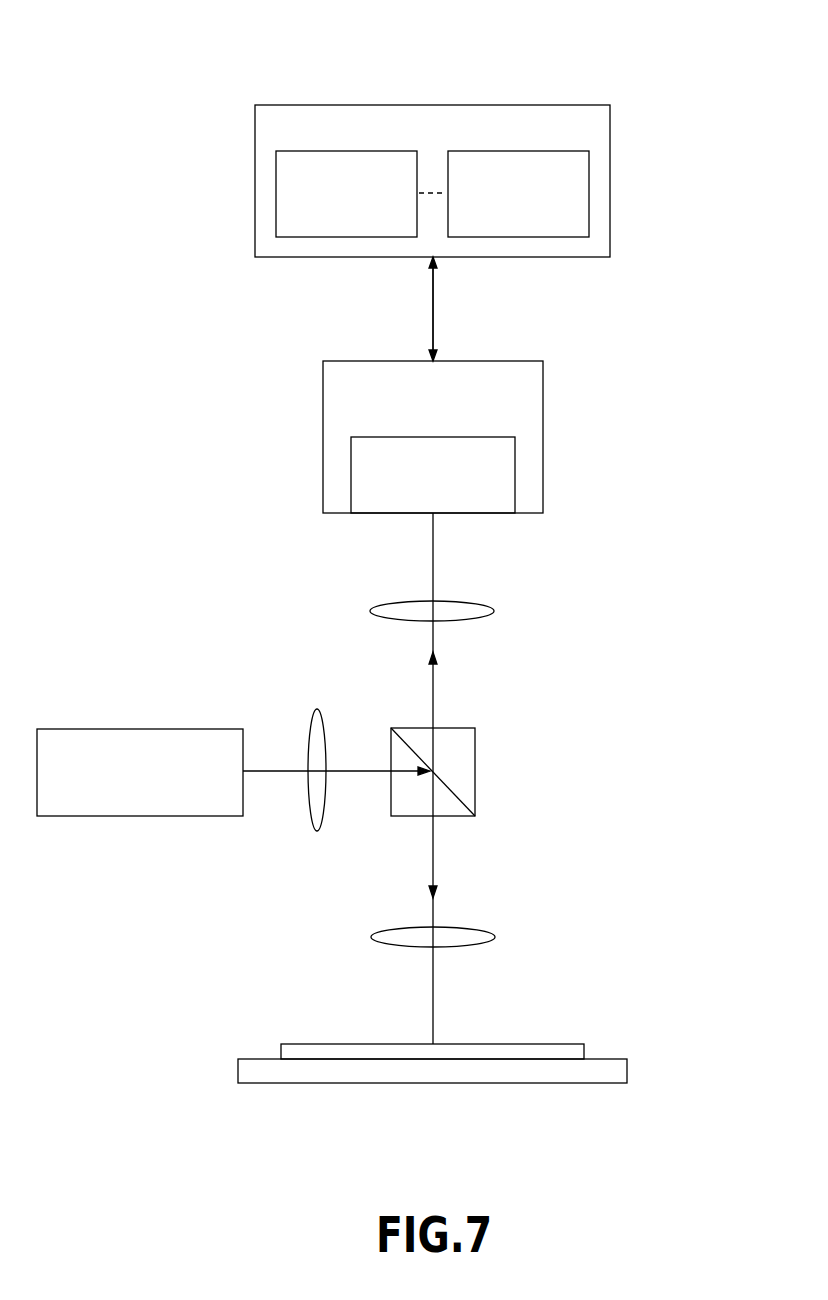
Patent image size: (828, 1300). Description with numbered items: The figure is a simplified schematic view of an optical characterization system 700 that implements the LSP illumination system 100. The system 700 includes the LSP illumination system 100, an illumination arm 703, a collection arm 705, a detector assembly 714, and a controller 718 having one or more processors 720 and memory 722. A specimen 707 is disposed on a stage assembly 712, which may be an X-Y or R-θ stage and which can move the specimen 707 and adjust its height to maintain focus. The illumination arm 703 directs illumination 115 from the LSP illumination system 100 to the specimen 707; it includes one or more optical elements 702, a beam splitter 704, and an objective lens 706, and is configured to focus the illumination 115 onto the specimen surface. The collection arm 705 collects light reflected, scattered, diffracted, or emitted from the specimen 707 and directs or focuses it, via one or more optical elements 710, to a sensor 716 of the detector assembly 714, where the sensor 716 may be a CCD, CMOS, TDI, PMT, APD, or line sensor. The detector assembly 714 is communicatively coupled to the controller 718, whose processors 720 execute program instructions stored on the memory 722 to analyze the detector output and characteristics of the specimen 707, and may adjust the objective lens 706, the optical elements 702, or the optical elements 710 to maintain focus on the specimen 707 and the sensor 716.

The optical characterization system 700 is at (202, 56).
The controller 718 is at (452, 139).
The processors 720 is at (367, 206).
The memory 722 is at (538, 206).
The detector assembly 714 is at (453, 411).
The sensor 716 is at (453, 489).
The optical elements 710 is at (484, 604).
The illumination arm 703 is at (296, 604).
The collection arm 705 is at (528, 692).
The illumination 115 is at (277, 770).
The LSP illumination system 100 is at (160, 780).
The optical elements 702 is at (314, 829).
The beam splitter 704 is at (476, 769).
The objective lens 706 is at (485, 930).
The specimen 707 is at (586, 1054).
The stage assembly 712 is at (629, 1073).